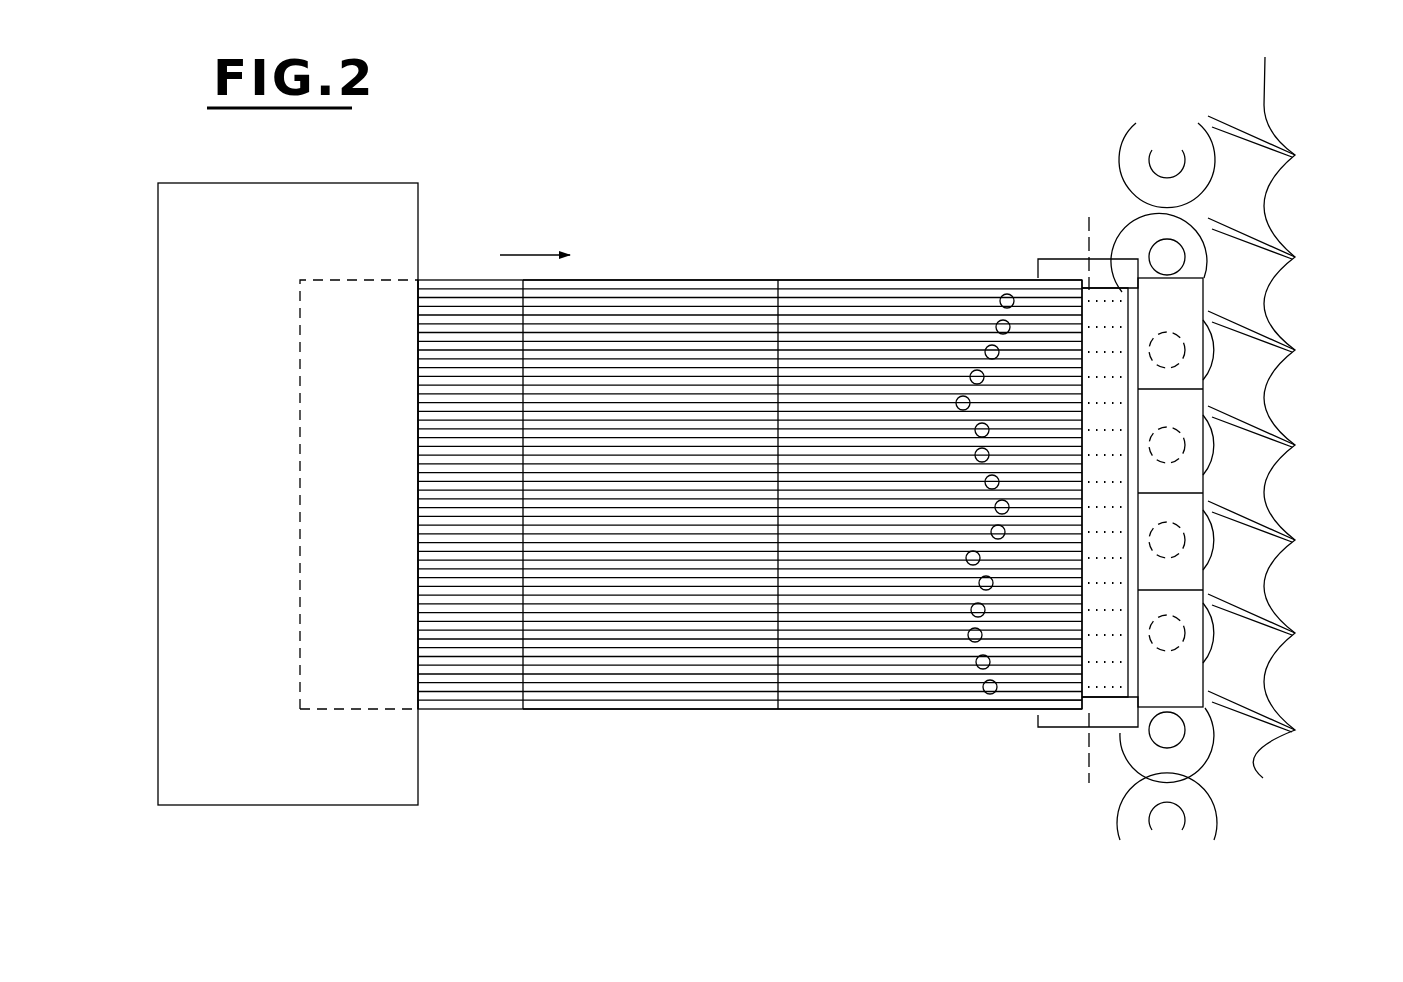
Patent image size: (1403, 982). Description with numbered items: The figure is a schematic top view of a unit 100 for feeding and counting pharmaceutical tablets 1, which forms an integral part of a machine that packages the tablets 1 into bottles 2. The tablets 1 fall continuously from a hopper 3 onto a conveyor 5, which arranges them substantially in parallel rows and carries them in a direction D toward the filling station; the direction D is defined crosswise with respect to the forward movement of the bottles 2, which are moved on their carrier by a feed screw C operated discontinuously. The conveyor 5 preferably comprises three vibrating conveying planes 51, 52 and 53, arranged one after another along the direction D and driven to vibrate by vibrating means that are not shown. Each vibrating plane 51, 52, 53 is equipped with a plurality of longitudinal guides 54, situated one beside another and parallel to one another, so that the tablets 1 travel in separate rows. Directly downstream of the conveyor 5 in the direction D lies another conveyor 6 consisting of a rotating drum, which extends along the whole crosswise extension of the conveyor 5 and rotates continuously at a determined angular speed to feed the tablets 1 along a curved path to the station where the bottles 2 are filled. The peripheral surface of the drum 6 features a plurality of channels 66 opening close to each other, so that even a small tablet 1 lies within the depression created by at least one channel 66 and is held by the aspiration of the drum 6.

The unit for feeding and counting tablets 100 is at (867, 177).
The pharmaceutical tablets 1 is at (1005, 293).
The bottles 2 is at (1125, 153).
The hopper 3 is at (283, 775).
The conveyor 5 is at (668, 260).
The vibrating conveying plane 51 is at (476, 718).
The vibrating conveying plane 52 is at (645, 720).
The vibrating conveying plane 53 is at (862, 720).
The longitudinal guides 54 is at (935, 700).
The rotating drum conveyor 6 is at (1058, 714).
The channels 66 is at (1105, 300).
The feeding direction D is at (535, 238).
The feed screw C is at (1278, 410).